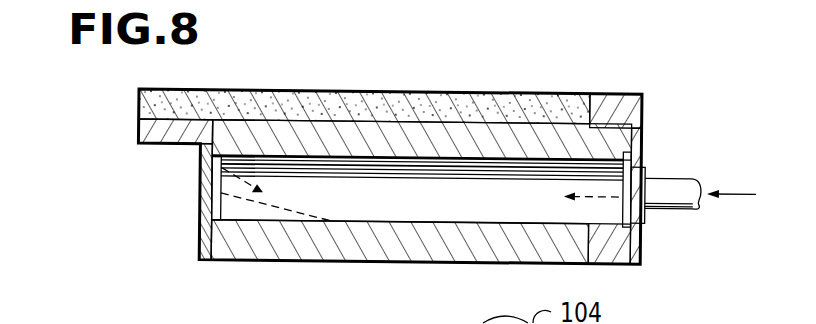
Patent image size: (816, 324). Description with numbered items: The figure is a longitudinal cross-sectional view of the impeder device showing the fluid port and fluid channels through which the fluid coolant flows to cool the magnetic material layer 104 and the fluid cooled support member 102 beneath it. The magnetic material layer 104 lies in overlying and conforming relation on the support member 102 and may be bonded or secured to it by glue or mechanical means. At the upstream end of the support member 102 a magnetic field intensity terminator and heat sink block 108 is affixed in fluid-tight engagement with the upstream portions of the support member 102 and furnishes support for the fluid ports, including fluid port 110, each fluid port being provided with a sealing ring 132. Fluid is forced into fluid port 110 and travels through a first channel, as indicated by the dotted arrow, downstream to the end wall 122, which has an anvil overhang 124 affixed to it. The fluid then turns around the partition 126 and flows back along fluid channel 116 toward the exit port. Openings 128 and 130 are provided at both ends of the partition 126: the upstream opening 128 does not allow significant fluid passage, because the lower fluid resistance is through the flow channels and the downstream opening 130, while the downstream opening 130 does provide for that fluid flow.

The fluid cooled support member 102 is at (278, 249).
The magnetic material layer 104 is at (392, 86).
The magnetic field intensity terminator and heat sink block 108 is at (623, 101).
The fluid port 110 is at (673, 182).
The fluid channel 116 is at (429, 226).
The end wall 122 is at (205, 217).
The anvil overhang 124 is at (145, 147).
The partition 126 is at (410, 208).
The upstream opening 128 is at (630, 155).
The downstream opening 130 is at (217, 174).
The sealing ring 132 is at (645, 224).